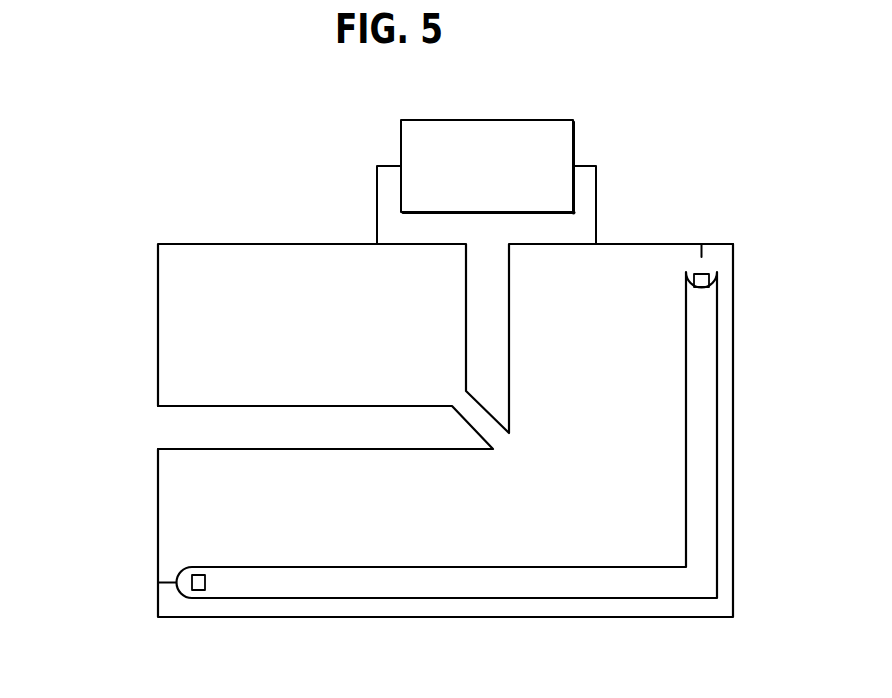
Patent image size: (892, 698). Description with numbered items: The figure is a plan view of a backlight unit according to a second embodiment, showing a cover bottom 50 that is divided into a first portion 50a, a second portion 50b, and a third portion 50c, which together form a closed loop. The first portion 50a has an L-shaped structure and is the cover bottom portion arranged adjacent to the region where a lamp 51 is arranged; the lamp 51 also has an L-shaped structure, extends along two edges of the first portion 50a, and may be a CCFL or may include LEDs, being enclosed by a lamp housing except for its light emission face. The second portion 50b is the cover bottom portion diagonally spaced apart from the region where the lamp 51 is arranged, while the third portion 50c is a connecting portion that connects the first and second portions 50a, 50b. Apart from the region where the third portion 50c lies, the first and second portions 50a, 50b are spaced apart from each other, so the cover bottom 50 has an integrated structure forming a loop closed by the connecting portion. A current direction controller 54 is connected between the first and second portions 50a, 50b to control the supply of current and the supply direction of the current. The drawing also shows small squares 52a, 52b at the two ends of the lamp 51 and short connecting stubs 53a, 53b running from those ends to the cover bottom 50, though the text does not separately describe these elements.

The cover bottom 50 is at (377, 430).
The first portion 50a is at (176, 483).
The second portion 50b is at (176, 348).
The third portion 50c is at (470, 428).
The lamp 51 is at (700, 414).
The first terminal 52a is at (709, 280).
The second terminal 52b is at (200, 590).
The first connection stub 53a is at (701, 248).
The second connection stub 53b is at (166, 598).
The current direction controller 54 is at (540, 131).